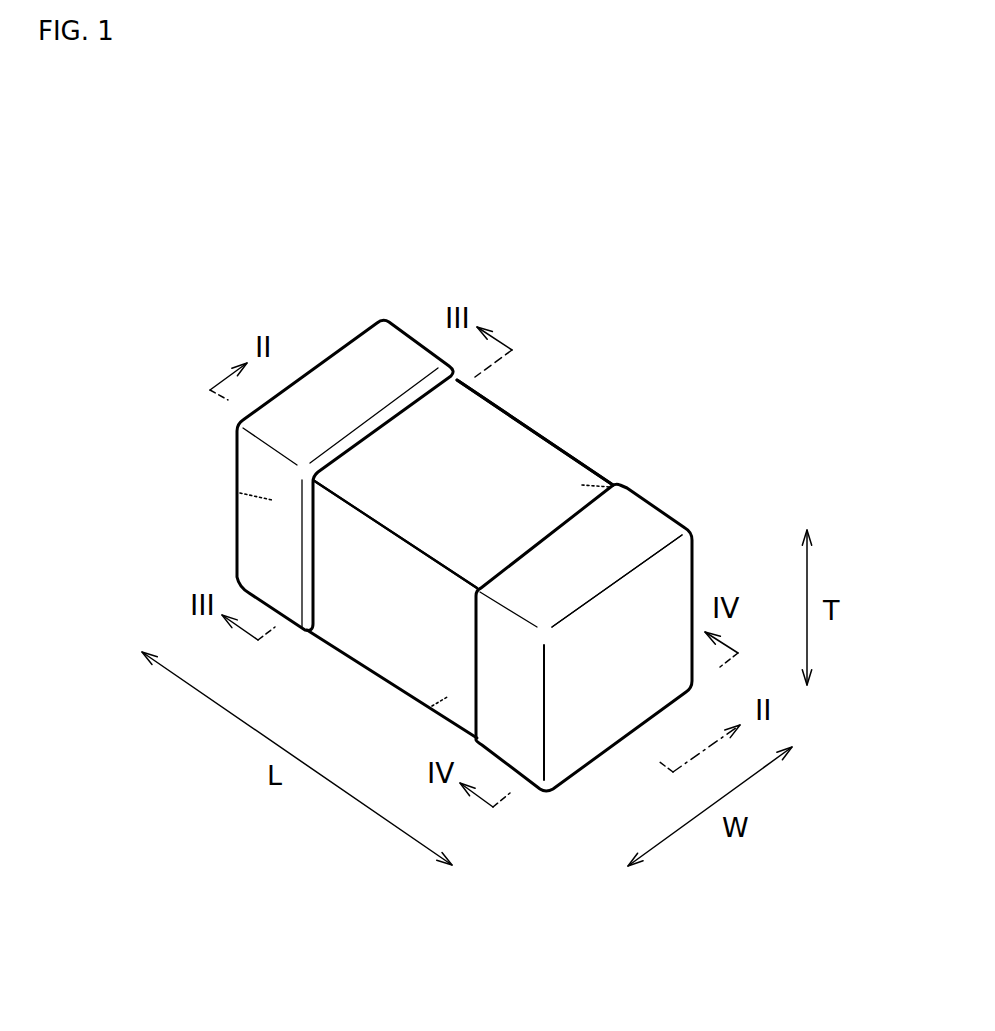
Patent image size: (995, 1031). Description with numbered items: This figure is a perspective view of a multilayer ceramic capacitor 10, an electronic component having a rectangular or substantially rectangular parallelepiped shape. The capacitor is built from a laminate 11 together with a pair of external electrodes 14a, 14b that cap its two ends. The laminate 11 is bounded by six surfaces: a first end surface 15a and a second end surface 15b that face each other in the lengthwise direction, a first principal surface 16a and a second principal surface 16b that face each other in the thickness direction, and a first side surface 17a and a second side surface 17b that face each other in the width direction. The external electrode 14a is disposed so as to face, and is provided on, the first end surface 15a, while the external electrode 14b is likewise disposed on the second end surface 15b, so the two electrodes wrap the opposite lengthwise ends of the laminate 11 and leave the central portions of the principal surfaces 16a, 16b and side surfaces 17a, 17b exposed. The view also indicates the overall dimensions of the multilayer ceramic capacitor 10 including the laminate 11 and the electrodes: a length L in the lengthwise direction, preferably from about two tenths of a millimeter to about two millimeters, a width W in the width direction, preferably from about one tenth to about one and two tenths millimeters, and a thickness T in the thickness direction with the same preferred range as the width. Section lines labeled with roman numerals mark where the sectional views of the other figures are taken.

The multilayer ceramic capacitor 10 is at (524, 499).
The laminate 11 is at (512, 442).
The external electrode 14a is at (368, 353).
The external electrode 14b is at (648, 515).
The first end surface 15a is at (237, 493).
The second end surface 15b is at (568, 720).
The first principal surface 16a is at (563, 473).
The second principal surface 16b is at (443, 712).
The first side surface 17a is at (400, 643).
The second side surface 17b is at (610, 483).